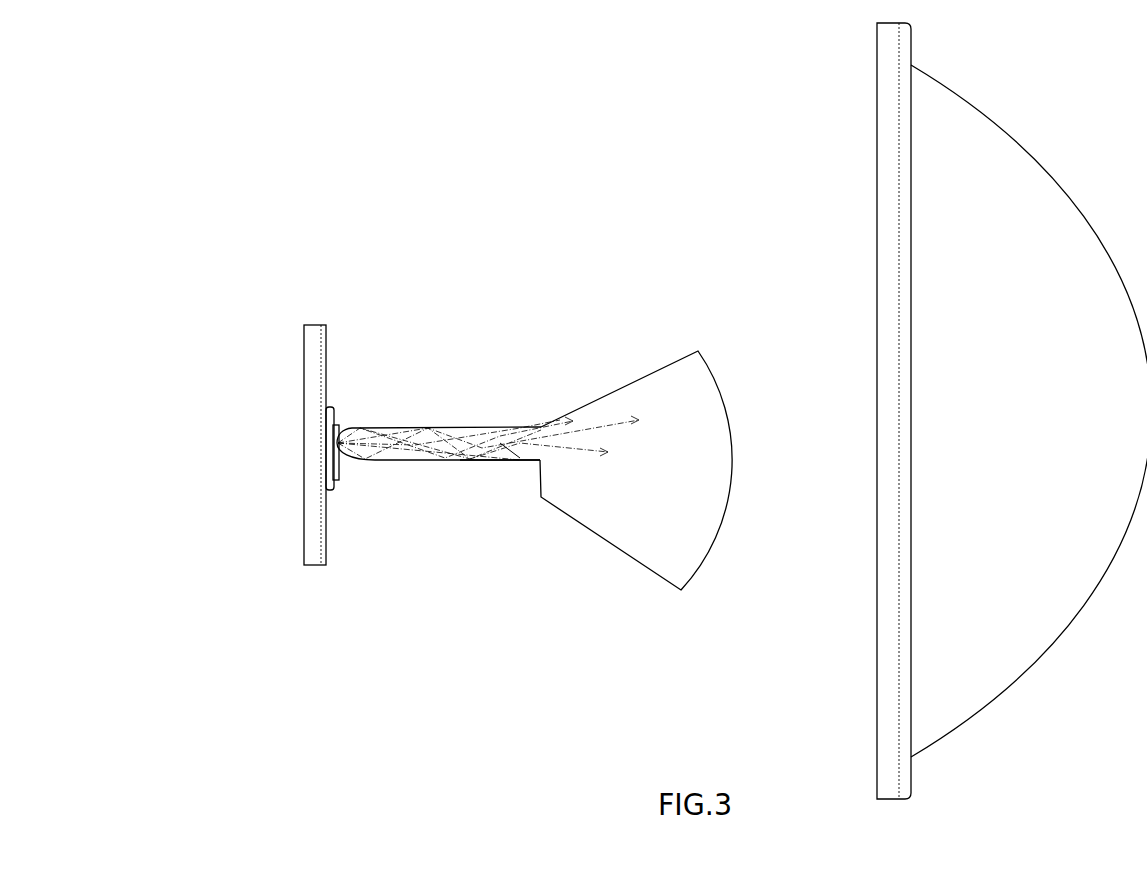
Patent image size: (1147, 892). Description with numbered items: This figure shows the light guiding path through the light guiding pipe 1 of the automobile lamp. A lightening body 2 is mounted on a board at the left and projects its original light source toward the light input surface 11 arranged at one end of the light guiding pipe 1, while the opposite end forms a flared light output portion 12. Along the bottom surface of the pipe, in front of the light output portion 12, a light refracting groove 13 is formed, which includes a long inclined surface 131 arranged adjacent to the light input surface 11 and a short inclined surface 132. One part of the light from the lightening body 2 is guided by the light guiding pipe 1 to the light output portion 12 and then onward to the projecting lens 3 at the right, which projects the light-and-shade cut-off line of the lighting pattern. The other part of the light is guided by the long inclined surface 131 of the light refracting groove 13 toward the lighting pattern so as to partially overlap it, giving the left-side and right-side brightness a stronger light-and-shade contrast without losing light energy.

The light guiding pipe 1 is at (373, 588).
The light input surface 11 is at (337, 462).
The light output portion 12 is at (616, 517).
The light refracting groove 13 is at (488, 509).
The long inclined surface 131 is at (478, 460).
The short inclined surface 132 is at (516, 460).
The lightening body 2 is at (304, 388).
The projecting lens 3 is at (877, 258).